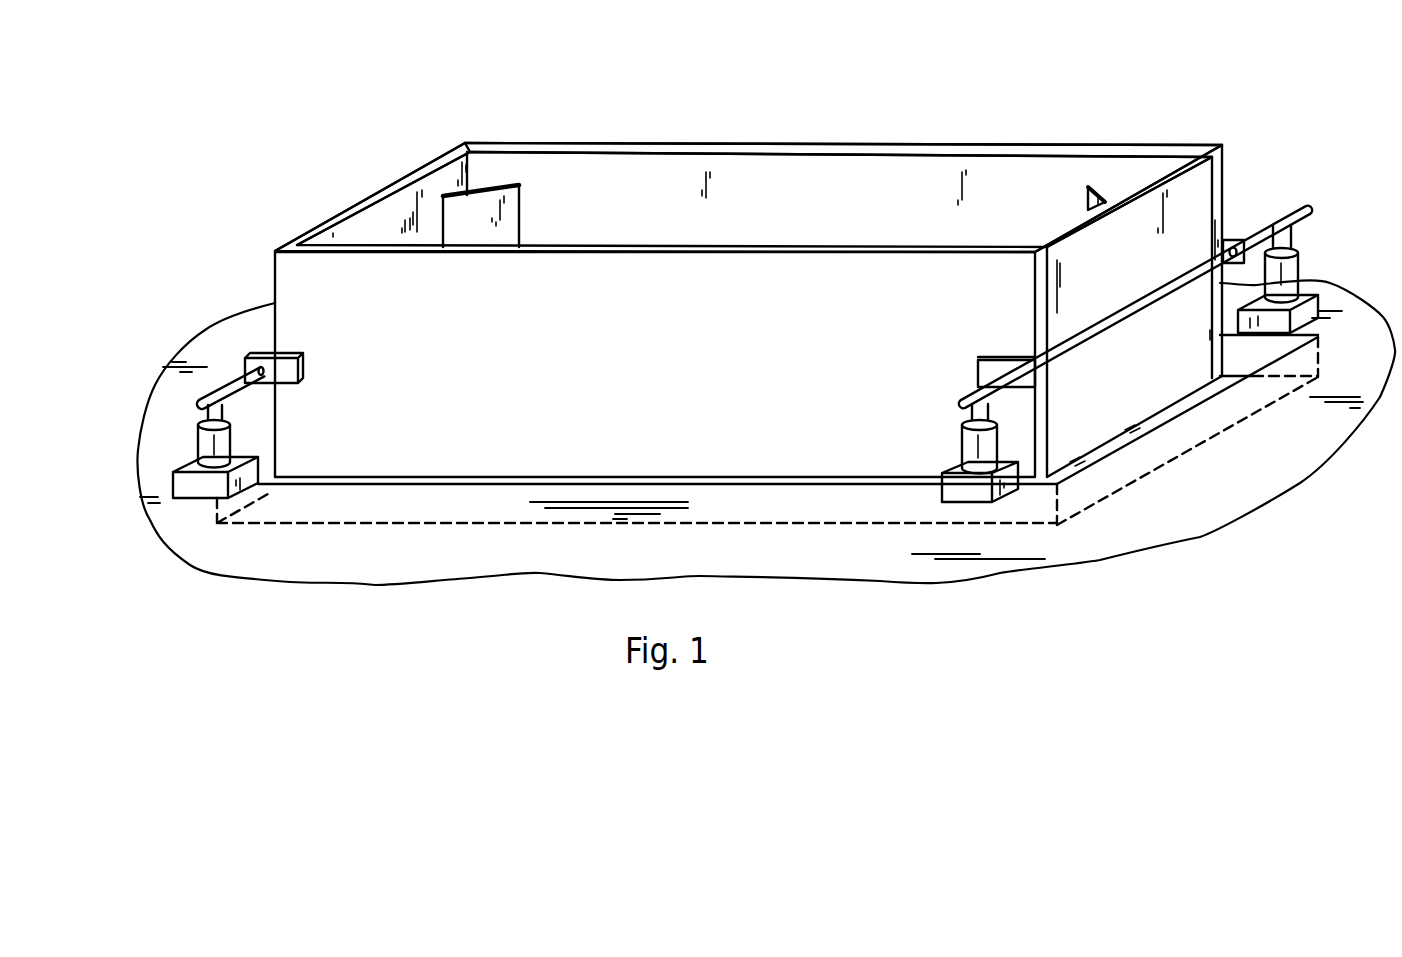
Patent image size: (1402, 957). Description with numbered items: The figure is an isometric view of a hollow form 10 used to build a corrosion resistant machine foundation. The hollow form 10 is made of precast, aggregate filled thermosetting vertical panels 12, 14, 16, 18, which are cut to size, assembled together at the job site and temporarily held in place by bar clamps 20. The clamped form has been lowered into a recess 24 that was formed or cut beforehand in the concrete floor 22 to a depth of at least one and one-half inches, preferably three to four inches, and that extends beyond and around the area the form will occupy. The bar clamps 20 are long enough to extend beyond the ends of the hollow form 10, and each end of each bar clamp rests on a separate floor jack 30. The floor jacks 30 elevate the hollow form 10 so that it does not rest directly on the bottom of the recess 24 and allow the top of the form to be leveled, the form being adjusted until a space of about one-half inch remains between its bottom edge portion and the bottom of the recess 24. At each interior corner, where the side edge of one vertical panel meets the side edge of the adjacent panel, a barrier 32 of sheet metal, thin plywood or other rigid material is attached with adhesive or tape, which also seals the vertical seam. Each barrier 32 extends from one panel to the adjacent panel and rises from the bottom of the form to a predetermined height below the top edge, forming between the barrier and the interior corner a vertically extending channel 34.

The hollow form 10 is at (822, 110).
The vertical panel 12 is at (690, 368).
The vertical panel 14 is at (758, 206).
The vertical panel 16 is at (360, 203).
The vertical panel 18 is at (1095, 267).
The bar clamp 20 is at (245, 372).
The concrete floor 22 is at (1216, 486).
The recess 24 is at (450, 482).
The floor jack 30 is at (208, 452).
The barrier 32 is at (508, 219).
The vertically extending channel 34 is at (493, 184).